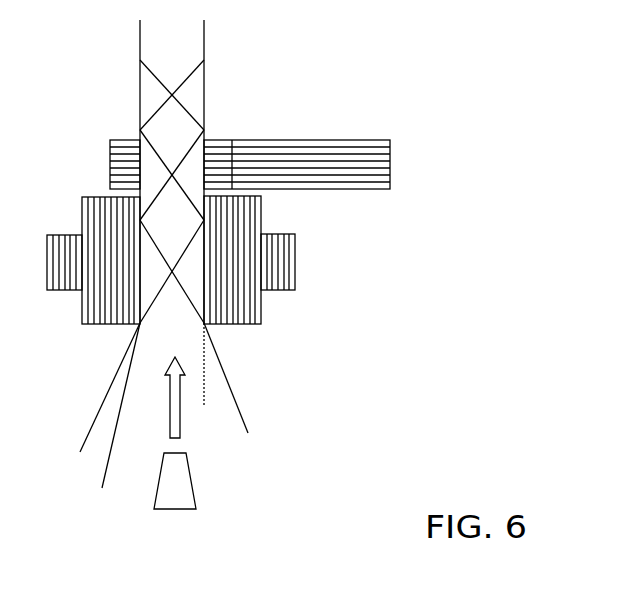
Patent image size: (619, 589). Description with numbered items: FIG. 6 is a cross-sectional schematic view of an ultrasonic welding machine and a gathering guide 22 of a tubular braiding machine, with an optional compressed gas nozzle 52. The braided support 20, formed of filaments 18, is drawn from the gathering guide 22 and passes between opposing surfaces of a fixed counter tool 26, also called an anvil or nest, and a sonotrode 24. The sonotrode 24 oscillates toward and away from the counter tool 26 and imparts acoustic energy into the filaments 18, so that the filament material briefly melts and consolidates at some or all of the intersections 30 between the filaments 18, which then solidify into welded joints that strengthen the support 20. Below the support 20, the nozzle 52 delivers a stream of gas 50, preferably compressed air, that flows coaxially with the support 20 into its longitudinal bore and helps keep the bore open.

The filaments 18 is at (123, 355).
The braided support 20 is at (215, 38).
The gathering guide 22 is at (295, 262).
The sonotrode 24 is at (390, 166).
The counter tool 26 is at (110, 163).
The intersections 30 is at (175, 92).
The stream of gas 50 is at (175, 418).
The nozzle 52 is at (182, 493).